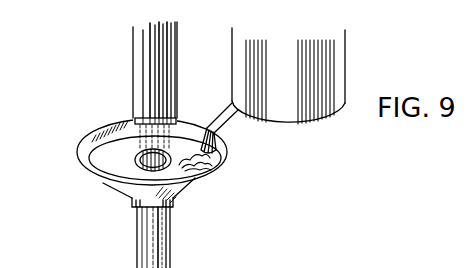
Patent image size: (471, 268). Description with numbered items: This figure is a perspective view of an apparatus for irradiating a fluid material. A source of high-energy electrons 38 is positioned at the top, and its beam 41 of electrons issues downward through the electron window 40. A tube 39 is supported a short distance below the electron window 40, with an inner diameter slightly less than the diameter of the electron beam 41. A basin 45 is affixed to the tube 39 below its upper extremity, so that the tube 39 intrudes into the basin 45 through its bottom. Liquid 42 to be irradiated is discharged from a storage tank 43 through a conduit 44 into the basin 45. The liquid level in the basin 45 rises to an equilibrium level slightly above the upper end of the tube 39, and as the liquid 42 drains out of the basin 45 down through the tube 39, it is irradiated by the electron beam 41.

The source of high-energy electrons 38 is at (130, 56).
The tube 39 is at (137, 250).
The electron window 40 is at (130, 119).
The beam of electrons 41 is at (176, 128).
The liquid 42 is at (113, 158).
The storage tank 43 is at (345, 52).
The conduit 44 is at (238, 128).
The basin 45 is at (214, 173).